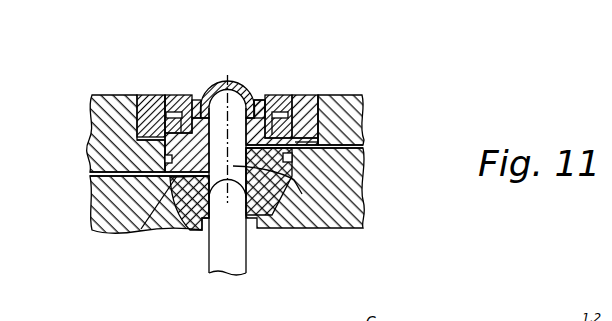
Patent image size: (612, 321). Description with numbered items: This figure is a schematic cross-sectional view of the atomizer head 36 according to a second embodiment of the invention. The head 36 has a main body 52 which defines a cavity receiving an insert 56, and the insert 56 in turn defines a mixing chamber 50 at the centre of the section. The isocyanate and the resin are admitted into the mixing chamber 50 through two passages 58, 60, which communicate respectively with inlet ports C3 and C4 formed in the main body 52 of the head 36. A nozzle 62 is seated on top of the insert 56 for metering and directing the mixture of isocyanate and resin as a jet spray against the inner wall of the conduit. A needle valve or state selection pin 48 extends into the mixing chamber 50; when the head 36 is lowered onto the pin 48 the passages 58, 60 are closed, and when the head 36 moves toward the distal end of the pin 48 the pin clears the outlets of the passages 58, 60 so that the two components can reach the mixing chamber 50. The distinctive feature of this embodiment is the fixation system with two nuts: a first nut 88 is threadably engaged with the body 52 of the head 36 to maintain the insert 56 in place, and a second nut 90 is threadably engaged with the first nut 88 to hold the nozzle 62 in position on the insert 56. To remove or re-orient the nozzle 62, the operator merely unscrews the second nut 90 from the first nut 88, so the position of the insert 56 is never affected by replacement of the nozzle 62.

The head 36 is at (345, 86).
The first nut 88 is at (146, 86).
The second nut 90 is at (177, 86).
The nozzle 62 is at (251, 75).
The passage 60 is at (308, 138).
The mixing chamber 50 is at (292, 188).
The inlet port C3 is at (90, 176).
The inlet port C4 is at (363, 148).
The main body 52 is at (317, 210).
The insert 56 is at (190, 224).
The passage 58 is at (141, 229).
The needle valve or state selection pin 48 is at (249, 263).